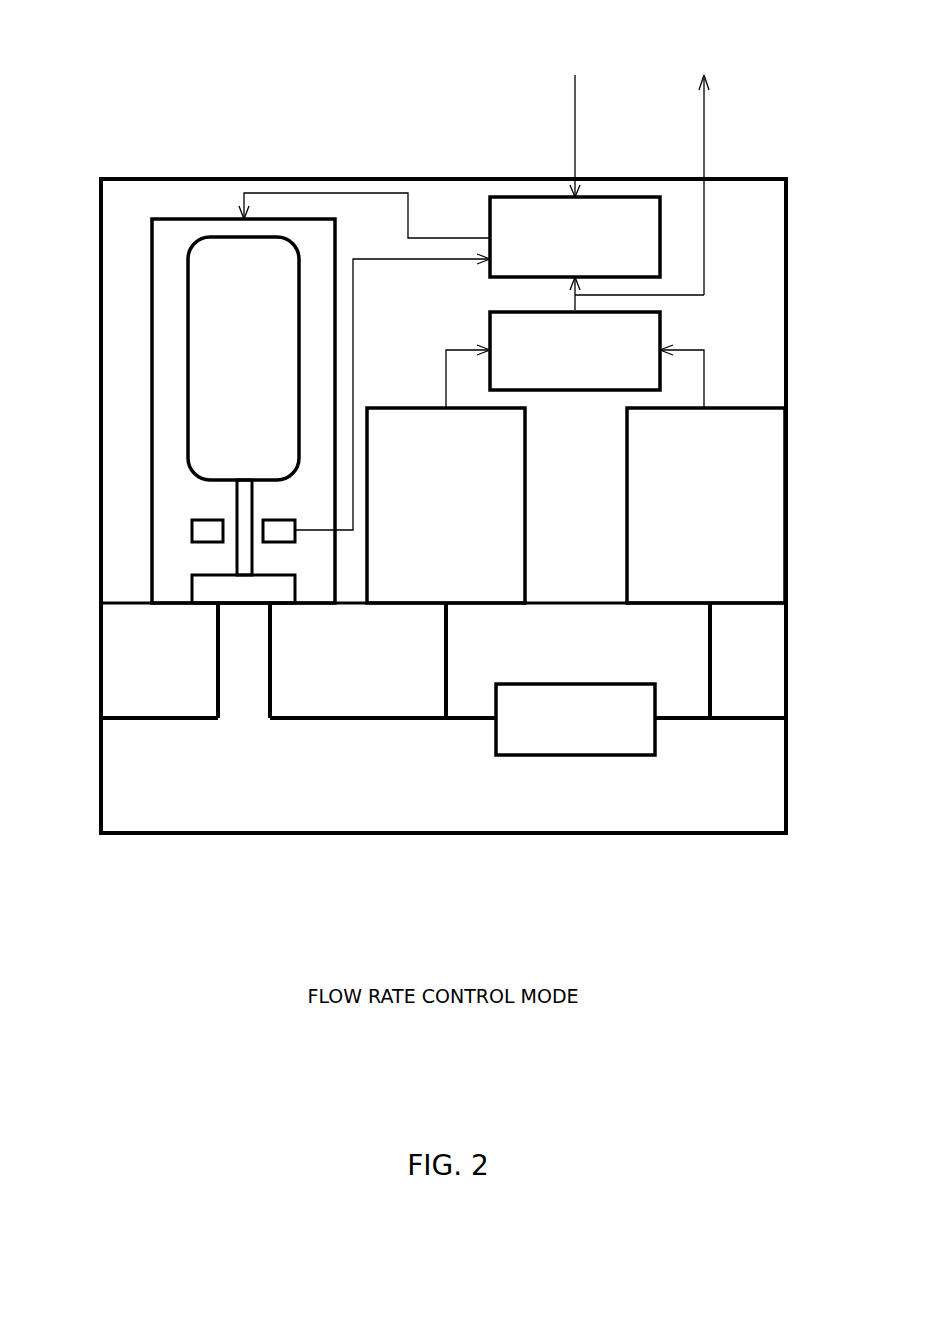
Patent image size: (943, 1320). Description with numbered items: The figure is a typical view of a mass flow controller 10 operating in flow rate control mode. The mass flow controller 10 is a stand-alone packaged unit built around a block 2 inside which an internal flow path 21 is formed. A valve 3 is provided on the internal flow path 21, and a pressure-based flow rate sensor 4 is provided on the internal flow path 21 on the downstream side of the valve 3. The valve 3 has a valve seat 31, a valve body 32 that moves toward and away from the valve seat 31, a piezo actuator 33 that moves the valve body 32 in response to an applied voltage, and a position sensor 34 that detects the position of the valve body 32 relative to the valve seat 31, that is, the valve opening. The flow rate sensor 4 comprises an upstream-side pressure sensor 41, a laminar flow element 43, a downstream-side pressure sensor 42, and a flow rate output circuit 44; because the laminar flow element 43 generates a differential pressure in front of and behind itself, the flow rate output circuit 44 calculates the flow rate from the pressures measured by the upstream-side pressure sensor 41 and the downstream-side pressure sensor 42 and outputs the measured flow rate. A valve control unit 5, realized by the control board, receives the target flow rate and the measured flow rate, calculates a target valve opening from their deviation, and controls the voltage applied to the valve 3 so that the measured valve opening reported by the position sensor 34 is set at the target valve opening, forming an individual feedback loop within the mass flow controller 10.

The mass flow controller 10 is at (166, 80).
The block 2 is at (326, 835).
The internal flow path 21 is at (306, 722).
The valve 3 is at (187, 216).
The valve seat 31 is at (205, 606).
The valve body 32 is at (192, 588).
The piezo actuator 33 is at (186, 343).
The position sensor 34 is at (292, 546).
The pressure-based flow rate sensor 4 is at (728, 312).
The upstream-side pressure sensor 41 is at (403, 606).
The downstream-side pressure sensor 42 is at (697, 606).
The laminar flow element 43 is at (575, 758).
The flow rate output circuit 44 is at (577, 393).
The valve control unit 5 is at (540, 195).